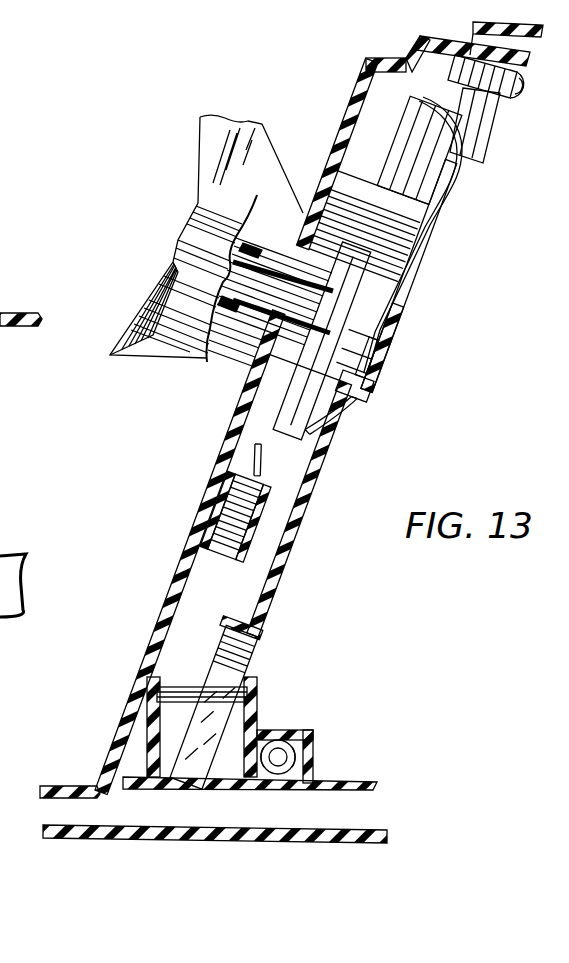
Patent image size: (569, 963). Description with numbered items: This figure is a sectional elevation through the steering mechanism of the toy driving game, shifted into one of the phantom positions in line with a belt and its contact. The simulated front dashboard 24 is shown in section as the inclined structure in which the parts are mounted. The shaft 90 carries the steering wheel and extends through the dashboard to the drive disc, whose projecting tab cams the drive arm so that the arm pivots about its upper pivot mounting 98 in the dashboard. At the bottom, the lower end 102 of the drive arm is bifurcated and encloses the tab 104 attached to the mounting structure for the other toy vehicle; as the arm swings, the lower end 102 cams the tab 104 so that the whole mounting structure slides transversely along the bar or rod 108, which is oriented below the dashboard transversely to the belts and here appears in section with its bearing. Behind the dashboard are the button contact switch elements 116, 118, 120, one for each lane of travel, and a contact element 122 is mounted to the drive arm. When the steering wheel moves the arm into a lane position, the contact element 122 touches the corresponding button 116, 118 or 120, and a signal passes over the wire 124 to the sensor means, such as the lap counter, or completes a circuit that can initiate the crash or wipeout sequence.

The simulated front dashboard 24 is at (165, 600).
The shaft 90 is at (200, 247).
The upper end pivot 98 is at (508, 108).
The lower end of drive arm 102 is at (193, 733).
The tab 104 is at (180, 690).
The bar or rod 108 is at (280, 737).
The button contact switch element 116 is at (287, 415).
The button contact switch element 118 is at (200, 414).
The button contact switch element 120 is at (205, 465).
The contact element 122 is at (327, 433).
The wire 124 is at (445, 207).